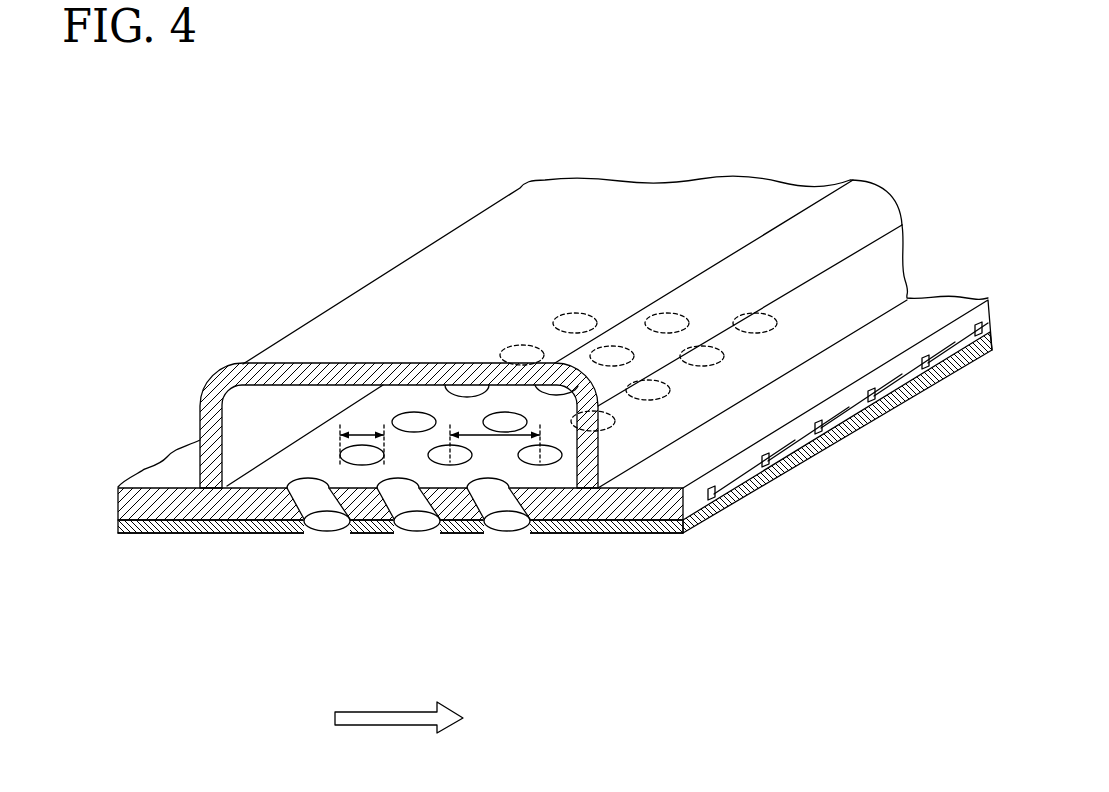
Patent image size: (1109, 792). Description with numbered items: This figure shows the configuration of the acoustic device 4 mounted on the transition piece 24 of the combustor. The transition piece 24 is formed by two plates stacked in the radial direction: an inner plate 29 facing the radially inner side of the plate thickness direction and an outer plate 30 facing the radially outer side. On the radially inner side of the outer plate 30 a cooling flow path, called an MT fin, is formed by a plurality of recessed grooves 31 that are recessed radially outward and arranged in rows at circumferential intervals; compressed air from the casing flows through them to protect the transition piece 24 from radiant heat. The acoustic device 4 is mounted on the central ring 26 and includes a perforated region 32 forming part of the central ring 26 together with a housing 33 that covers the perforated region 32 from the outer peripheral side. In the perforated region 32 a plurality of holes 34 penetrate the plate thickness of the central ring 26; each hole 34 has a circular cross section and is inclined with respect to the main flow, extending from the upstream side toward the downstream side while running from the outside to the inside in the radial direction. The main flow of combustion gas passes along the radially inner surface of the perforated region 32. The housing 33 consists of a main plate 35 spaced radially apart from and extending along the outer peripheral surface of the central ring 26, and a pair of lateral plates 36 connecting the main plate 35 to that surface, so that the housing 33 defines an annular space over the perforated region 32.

The acoustic device 4 is at (901, 157).
The transition piece 24 is at (215, 209).
The central ring 26 is at (548, 420).
The inner plate 29 is at (148, 528).
The outer plate 30 is at (150, 505).
The recessed grooves 31 is at (830, 437).
The perforated region 32 is at (302, 565).
The housing 33 is at (614, 200).
The holes 34 is at (317, 530).
The main plate 35 is at (395, 290).
The lateral plates 36 is at (888, 265).